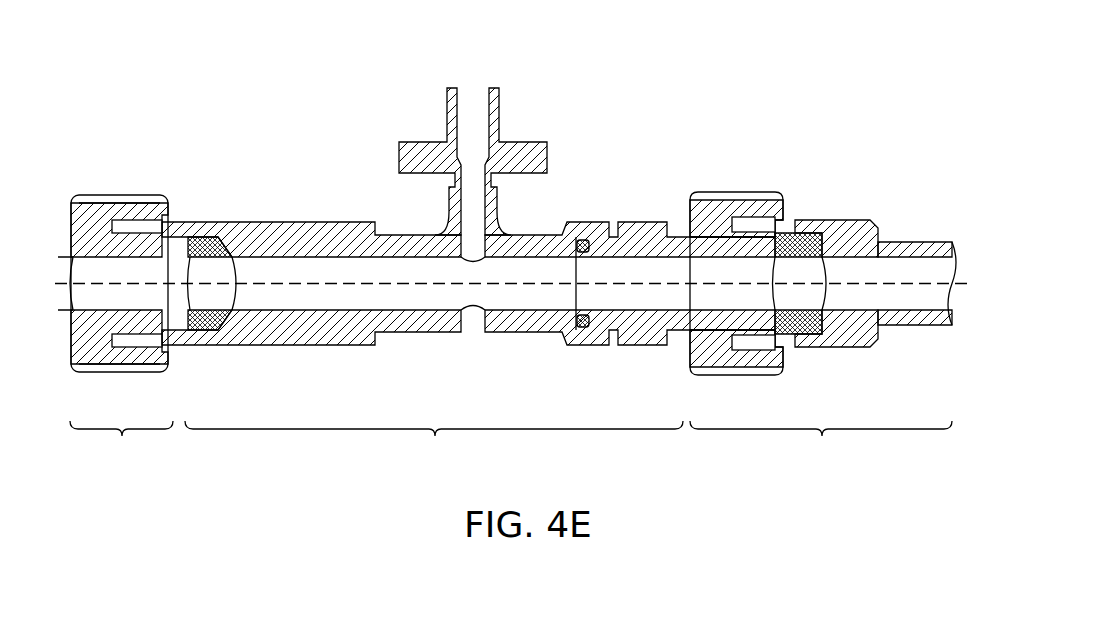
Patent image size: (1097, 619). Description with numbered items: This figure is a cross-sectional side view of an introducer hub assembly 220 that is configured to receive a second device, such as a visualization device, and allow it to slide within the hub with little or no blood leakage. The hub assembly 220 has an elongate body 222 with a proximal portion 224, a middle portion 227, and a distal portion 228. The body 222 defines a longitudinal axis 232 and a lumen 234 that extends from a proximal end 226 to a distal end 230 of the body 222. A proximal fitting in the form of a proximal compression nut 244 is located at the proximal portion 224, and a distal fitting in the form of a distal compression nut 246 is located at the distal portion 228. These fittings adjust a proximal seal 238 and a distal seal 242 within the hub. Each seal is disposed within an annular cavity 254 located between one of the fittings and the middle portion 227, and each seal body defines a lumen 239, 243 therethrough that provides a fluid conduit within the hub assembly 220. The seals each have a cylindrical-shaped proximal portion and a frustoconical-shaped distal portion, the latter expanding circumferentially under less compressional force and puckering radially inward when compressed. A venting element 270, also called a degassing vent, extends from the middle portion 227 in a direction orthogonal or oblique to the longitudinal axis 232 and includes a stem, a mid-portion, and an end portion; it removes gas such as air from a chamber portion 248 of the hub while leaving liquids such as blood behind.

The hub assembly 220 is at (251, 53).
The body 222 is at (592, 223).
The proximal portion 224 is at (121, 446).
The proximal end 226 is at (66, 226).
The middle portion 227 is at (434, 446).
The distal portion 228 is at (821, 446).
The distal end 230 is at (920, 242).
The longitudinal axis 232 is at (968, 283).
The lumen 234 is at (160, 293).
The proximal seal 238 is at (235, 242).
The lumen 239 is at (232, 292).
The distal seal 242 is at (806, 243).
The lumen 243 is at (815, 290).
The proximal compression nut 244 is at (128, 195).
The distal compression nut 246 is at (715, 195).
The chamber portion 248 is at (304, 283).
The annular cavity 254 is at (200, 232).
The venting element 270 is at (522, 140).